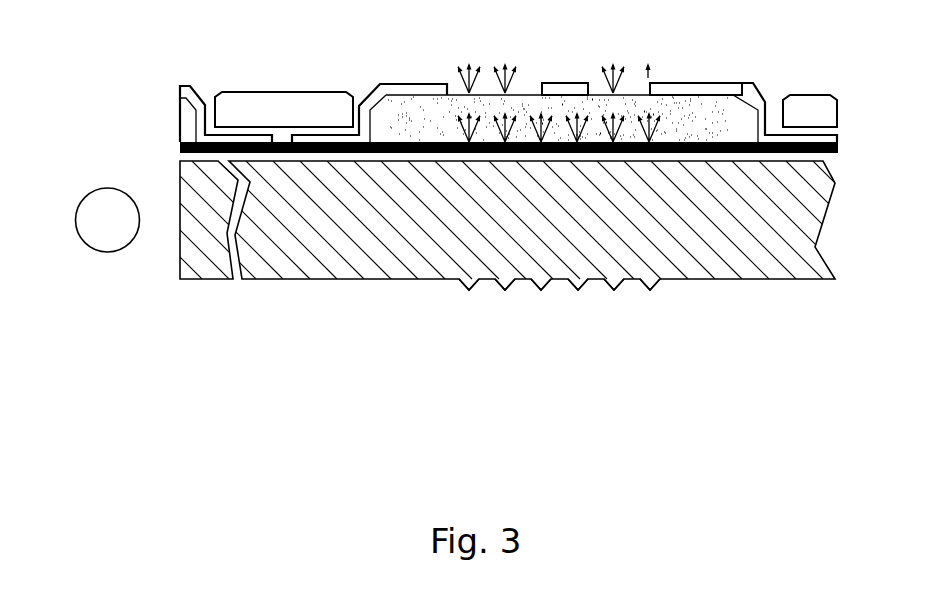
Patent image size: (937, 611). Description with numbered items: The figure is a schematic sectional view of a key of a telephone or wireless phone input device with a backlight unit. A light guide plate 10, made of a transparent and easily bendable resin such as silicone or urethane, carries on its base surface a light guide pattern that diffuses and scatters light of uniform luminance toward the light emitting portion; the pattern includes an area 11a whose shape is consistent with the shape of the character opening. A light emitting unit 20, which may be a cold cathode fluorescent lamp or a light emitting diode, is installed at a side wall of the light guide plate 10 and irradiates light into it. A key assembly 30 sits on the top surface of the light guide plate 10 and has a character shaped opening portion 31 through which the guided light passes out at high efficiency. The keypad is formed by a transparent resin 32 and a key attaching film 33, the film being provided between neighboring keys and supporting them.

The light guide plate 10 is at (828, 230).
The area of a shape consistent with the shape of the opening portion 11a is at (650, 289).
The light emitting unit 20 is at (86, 193).
The key assembly 30 is at (370, 83).
The character shaped opening portion 31 is at (647, 88).
The transparent resin 32 is at (732, 114).
The key attaching film 33 is at (840, 121).